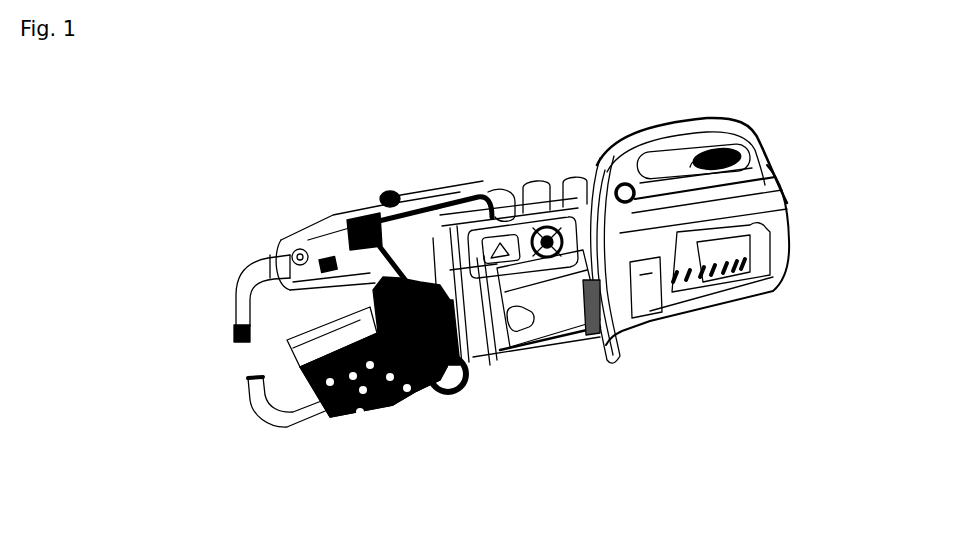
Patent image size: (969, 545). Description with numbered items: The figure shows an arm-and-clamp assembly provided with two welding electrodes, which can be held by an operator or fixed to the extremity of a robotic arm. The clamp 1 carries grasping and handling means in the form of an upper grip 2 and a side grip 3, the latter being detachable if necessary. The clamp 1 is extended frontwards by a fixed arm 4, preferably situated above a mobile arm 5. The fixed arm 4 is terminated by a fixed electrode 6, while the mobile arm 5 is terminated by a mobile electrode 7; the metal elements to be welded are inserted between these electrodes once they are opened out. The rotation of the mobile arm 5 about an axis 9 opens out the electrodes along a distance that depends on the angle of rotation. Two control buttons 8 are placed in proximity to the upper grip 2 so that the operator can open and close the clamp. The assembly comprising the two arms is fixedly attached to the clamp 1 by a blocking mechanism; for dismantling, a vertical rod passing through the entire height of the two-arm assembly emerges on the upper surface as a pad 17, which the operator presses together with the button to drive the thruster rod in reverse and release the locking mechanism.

The clamp 1 is at (740, 303).
The upper grip 2 is at (686, 122).
The side grip 3 is at (524, 323).
The fixed arm 4 is at (330, 212).
The mobile arm 5 is at (384, 410).
The fixed electrode 6 is at (228, 322).
The mobile electrode 7 is at (293, 418).
The control buttons 8 is at (600, 162).
The axis 9 is at (468, 377).
The pad 17 is at (396, 188).